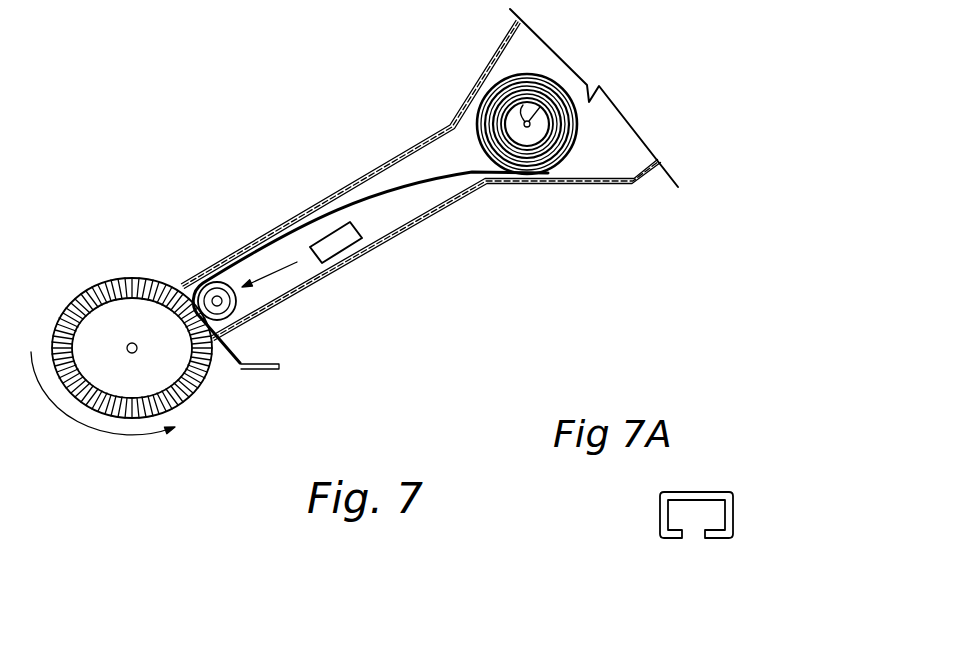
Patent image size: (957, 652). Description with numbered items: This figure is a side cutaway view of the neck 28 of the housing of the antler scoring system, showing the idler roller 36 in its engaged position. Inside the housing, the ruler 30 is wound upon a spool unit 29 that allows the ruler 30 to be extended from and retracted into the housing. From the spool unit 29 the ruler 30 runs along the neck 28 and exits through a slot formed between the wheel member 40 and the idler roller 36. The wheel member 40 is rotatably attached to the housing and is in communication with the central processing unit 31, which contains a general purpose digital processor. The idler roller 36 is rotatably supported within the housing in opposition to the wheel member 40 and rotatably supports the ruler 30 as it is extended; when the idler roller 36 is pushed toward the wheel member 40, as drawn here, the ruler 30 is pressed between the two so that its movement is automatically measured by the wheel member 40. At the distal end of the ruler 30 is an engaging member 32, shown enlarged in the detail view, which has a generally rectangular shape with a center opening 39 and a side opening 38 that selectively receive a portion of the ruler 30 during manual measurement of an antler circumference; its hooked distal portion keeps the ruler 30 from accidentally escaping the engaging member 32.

In FIG. 7, the neck 28 is at (400, 157).
In FIG. 7, the spool unit 29 is at (557, 92).
In FIG. 7, the ruler 30 is at (433, 205).
In FIG. 7, the central processing unit 31 is at (327, 232).
In FIG. 7, the engaging member 32 is at (292, 354).
In FIG. 7A, the engaging member 32 is at (722, 460).
In FIG. 7, the idler roller 36 is at (238, 305).
In FIG. 7, the side opening 38 is at (259, 379).
In FIG. 7A, the side opening 38 is at (692, 533).
In FIG. 7A, the center opening 39 is at (703, 518).
In FIG. 7, the wheel member 40 is at (102, 285).